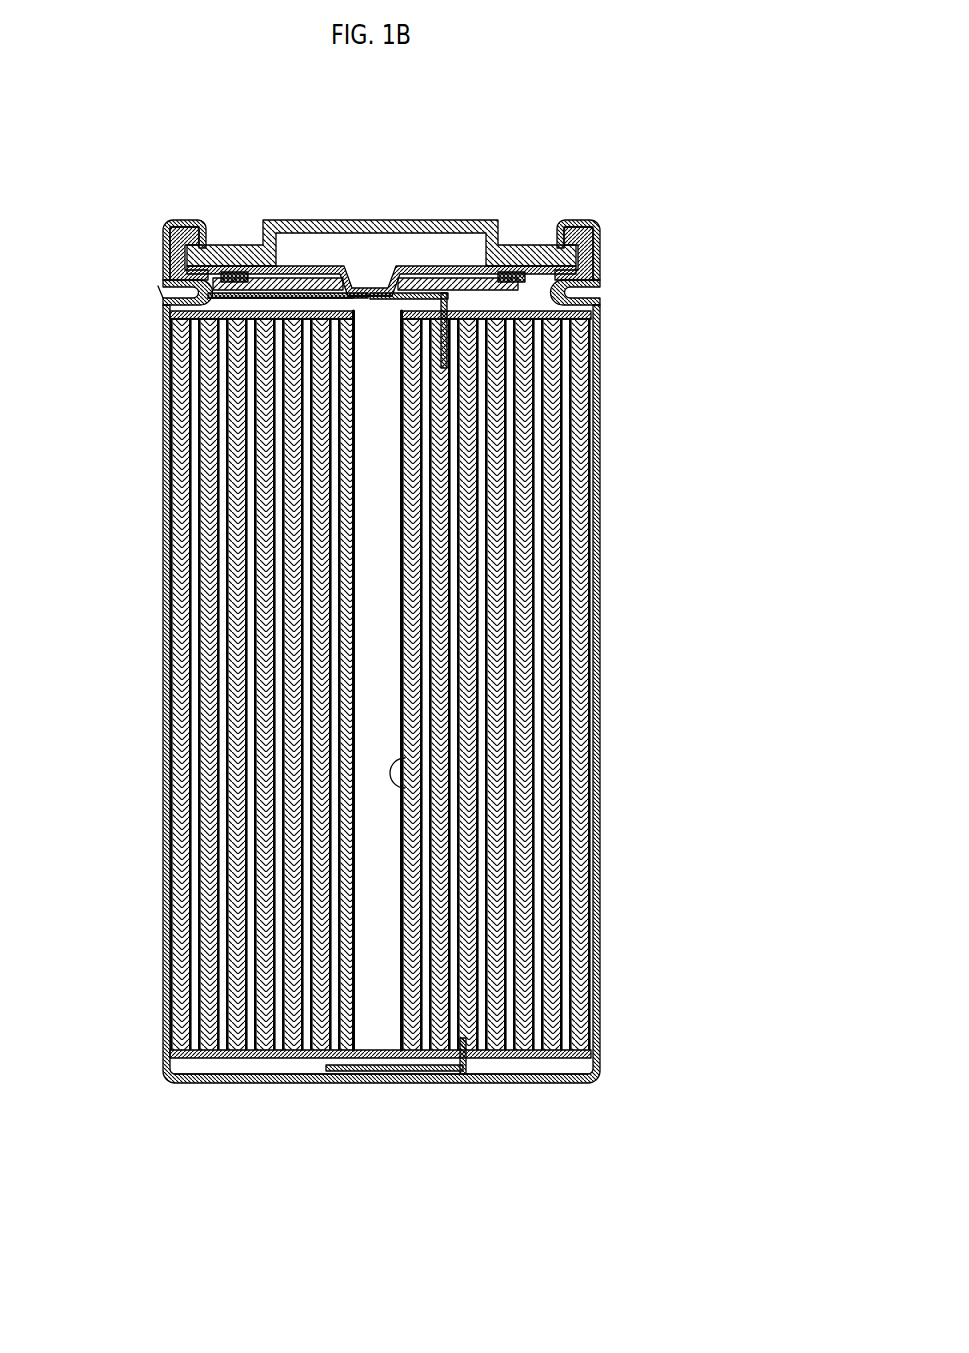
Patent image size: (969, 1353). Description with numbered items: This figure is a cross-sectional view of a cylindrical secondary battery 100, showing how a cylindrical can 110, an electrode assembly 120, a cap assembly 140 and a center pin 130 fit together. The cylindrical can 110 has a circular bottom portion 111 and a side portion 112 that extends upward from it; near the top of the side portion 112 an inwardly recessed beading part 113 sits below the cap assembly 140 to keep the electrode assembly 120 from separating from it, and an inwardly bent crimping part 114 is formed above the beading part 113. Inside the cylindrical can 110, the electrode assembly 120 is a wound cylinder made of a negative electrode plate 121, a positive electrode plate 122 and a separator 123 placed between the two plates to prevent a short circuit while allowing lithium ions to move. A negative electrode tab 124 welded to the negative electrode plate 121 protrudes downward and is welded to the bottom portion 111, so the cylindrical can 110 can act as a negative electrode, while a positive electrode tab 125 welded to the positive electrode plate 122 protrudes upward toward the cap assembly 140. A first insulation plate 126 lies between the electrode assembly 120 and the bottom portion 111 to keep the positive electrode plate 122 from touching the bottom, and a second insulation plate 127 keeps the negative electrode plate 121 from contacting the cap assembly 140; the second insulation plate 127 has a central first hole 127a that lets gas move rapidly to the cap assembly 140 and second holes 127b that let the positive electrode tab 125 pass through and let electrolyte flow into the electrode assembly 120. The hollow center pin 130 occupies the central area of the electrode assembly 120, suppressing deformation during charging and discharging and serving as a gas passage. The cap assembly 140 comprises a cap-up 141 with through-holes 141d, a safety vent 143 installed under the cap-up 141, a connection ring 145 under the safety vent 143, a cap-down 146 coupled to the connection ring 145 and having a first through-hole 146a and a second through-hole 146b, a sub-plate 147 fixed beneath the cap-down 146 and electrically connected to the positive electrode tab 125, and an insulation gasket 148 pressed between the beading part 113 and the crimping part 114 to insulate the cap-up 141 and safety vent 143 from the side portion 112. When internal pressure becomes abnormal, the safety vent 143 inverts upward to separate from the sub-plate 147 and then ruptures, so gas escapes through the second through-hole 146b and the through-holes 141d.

The secondary battery 100 is at (655, 155).
The cylindrical can 110 is at (612, 972).
The bottom portion 111 is at (510, 1075).
The side portion 112 is at (595, 895).
The beading part 113 is at (590, 281).
The crimping part 114 is at (566, 218).
The electrode assembly 120 is at (692, 577).
The negative electrode plate 121 is at (598, 582).
The positive electrode plate 122 is at (555, 690).
The separator 123 is at (570, 633).
The negative electrode tab 124 is at (370, 1063).
The positive electrode tab 125 is at (592, 338).
The first insulation plate 126 is at (232, 1050).
The second insulation plate 127 is at (330, 290).
The first hole 127a is at (372, 300).
The second holes 127b is at (335, 300).
The center pin 130 is at (405, 788).
The cap assembly 140 is at (224, 172).
The cap-up 141 is at (475, 235).
The through-holes 141d is at (344, 240).
The safety vent 143 is at (436, 284).
The connection ring 145 is at (210, 215).
The cap-down 146 is at (518, 258).
The first through-hole 146a is at (378, 284).
The second through-hole 146b is at (275, 236).
The sub-plate 147 is at (153, 285).
The insulation gasket 148 is at (595, 237).